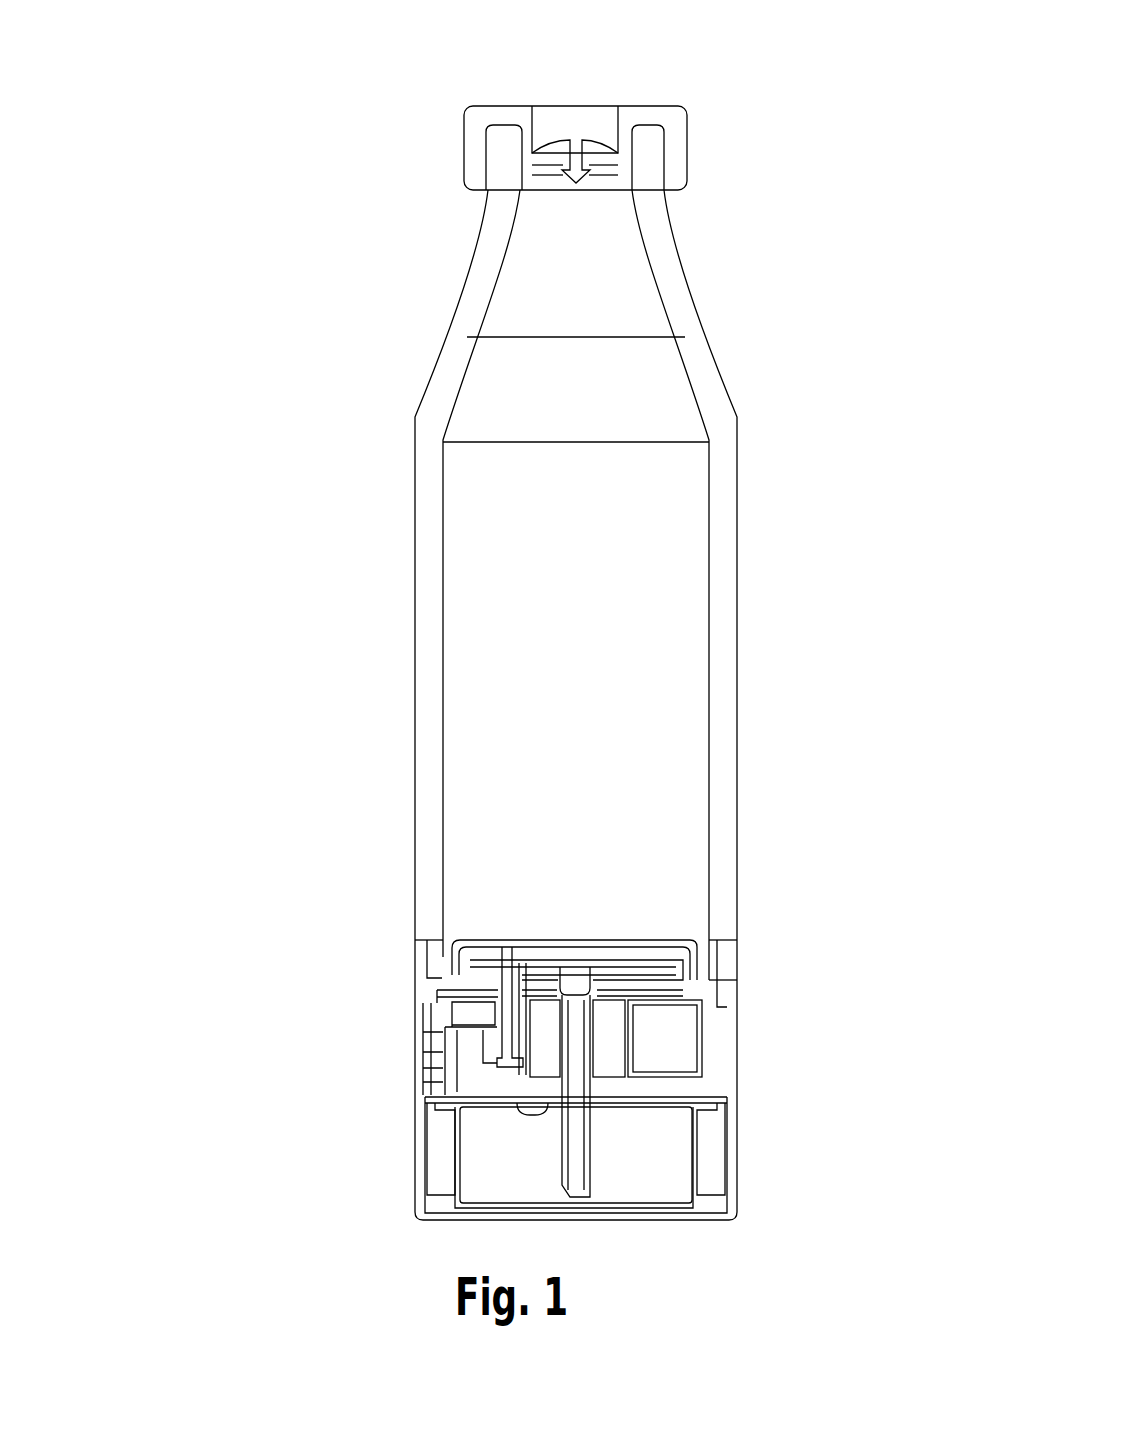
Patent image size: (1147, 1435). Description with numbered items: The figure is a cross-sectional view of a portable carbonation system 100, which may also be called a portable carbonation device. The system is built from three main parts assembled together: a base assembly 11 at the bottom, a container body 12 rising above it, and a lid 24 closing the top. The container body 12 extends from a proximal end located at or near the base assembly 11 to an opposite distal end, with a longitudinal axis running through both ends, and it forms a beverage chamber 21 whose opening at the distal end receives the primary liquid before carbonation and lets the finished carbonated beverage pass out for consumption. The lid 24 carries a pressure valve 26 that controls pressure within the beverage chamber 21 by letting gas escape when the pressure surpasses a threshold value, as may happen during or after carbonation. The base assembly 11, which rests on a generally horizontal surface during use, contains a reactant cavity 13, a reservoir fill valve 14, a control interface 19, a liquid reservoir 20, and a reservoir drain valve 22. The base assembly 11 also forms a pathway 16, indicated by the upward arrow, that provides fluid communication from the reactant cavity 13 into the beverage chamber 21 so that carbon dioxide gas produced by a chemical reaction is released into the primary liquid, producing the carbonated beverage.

The portable carbonation system 100 is at (864, 43).
The base assembly 11 is at (235, 1213).
The container body 12 is at (235, 945).
The reactant cavity 13 is at (683, 1178).
The reservoir fill valve 14 is at (497, 1063).
The pathway 16 is at (575, 985).
The control interface 19 is at (409, 1085).
The liquid reservoir 20 is at (698, 1070).
The beverage chamber 21 is at (970, 775).
The reservoir drain valve 22 is at (530, 1118).
The lid 24 is at (232, 115).
The pressure valve 26 is at (575, 106).